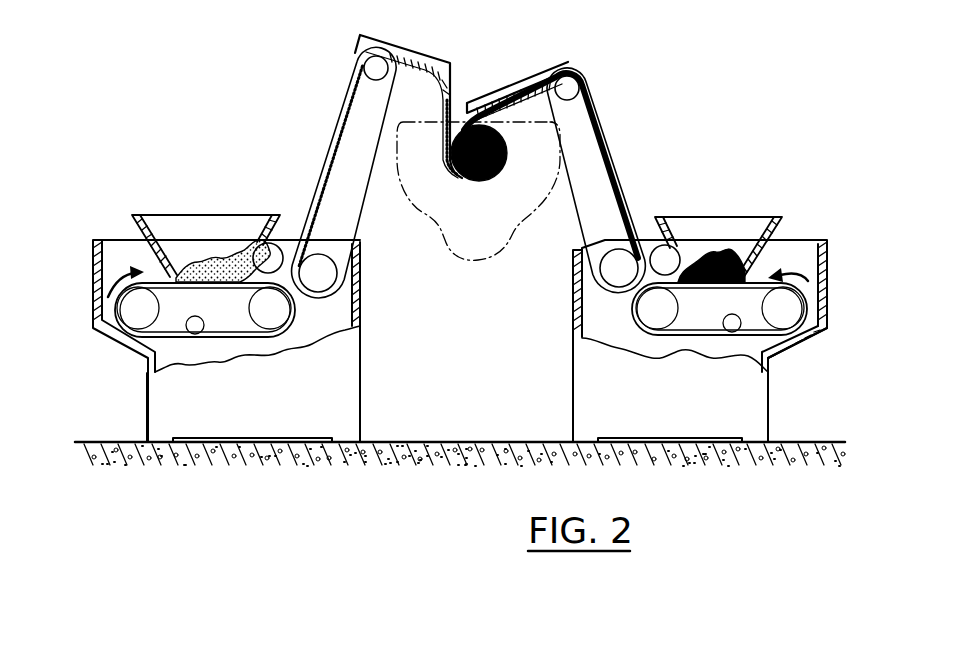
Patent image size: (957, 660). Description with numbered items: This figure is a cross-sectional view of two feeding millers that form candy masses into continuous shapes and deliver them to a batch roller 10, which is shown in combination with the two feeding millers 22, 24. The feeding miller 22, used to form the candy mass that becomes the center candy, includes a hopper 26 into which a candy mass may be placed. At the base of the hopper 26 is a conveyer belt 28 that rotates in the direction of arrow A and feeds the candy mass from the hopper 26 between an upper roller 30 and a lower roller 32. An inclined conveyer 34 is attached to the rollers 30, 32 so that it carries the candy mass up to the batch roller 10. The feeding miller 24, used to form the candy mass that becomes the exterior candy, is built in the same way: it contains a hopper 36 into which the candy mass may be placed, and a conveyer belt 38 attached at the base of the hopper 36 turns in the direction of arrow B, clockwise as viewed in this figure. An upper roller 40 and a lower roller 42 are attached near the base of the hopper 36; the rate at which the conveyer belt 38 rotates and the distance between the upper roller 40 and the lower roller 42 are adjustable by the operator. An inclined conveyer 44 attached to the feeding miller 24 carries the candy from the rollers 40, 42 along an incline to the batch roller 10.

The batch roller 10 is at (470, 70).
The feeding miller 22 is at (674, 278).
The feeding miller 24 is at (229, 282).
The hopper 26 is at (777, 215).
The conveyer belt 28 is at (763, 340).
The upper roller 30 is at (640, 236).
The lower roller 32 is at (606, 276).
The inclined conveyer 34 is at (594, 125).
The hopper 36 is at (142, 213).
The conveyer belt 38 is at (150, 337).
The upper roller 40 is at (292, 228).
The lower roller 42 is at (325, 284).
The inclined conveyer 44 is at (350, 120).
The arrow A is at (798, 268).
The arrow B is at (108, 282).